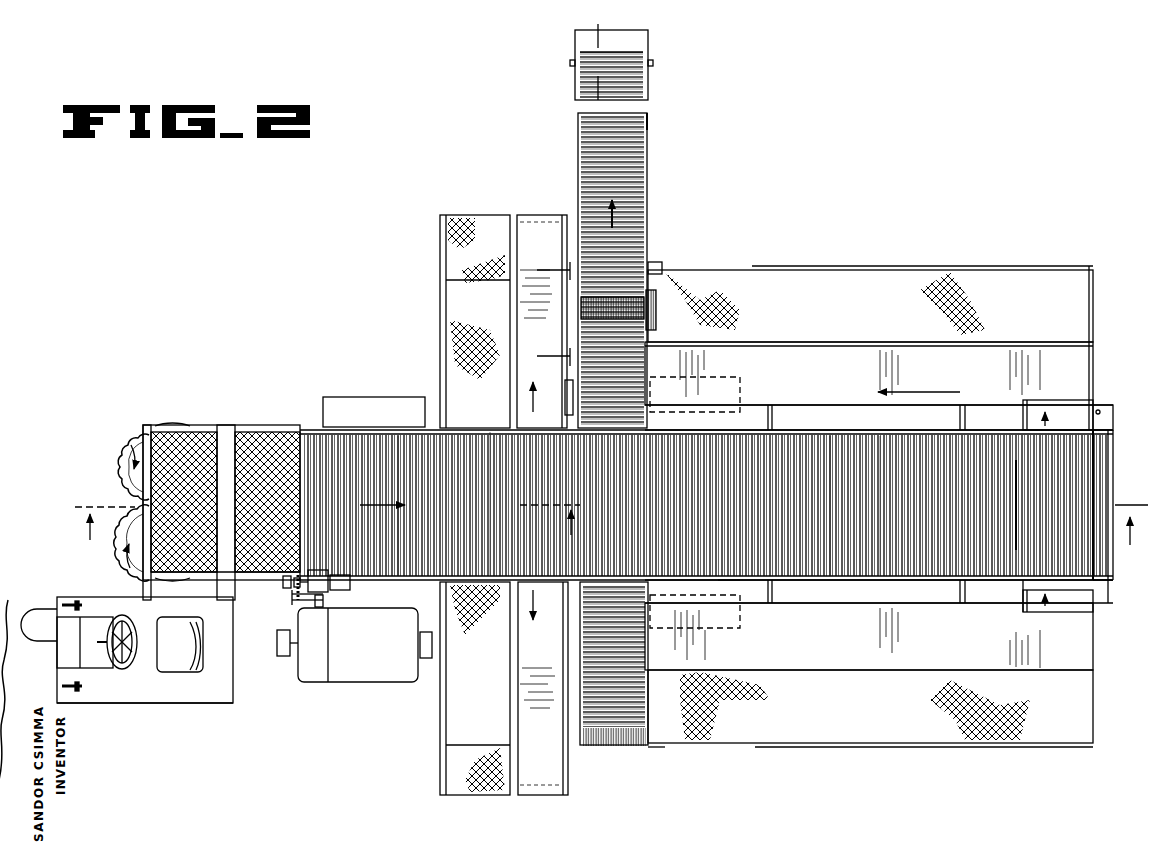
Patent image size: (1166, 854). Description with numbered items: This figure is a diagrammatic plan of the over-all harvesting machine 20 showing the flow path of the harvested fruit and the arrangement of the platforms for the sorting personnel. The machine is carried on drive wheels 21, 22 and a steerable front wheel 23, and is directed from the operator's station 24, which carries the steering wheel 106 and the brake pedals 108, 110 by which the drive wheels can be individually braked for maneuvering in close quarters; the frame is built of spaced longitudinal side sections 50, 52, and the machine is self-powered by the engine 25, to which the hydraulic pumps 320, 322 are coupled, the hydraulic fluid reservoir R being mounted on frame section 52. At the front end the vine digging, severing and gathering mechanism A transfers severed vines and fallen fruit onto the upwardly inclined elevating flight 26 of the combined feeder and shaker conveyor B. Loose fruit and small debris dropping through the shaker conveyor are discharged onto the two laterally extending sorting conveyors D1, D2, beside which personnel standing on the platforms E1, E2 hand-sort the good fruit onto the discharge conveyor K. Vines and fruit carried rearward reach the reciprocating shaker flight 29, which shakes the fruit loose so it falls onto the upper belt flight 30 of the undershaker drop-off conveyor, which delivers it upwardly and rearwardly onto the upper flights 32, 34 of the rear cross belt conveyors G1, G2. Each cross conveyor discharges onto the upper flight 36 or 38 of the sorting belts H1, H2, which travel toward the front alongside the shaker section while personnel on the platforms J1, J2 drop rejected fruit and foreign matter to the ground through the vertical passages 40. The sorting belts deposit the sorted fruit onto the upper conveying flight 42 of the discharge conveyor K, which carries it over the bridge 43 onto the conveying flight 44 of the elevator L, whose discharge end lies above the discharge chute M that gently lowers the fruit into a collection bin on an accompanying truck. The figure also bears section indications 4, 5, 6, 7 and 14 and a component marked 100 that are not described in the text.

The harvesting machine 20 is at (267, 313).
The elevating flight 26 is at (345, 448).
The shaker flight 29 is at (886, 461).
The vine digging, severing and gathering mechanism A is at (126, 452).
The combined feeder and shaker conveyor B is at (398, 430).
The drive frame 100 is at (127, 647).
The steerable front wheel 23 is at (44, 610).
The steering wheel 106 is at (122, 661).
The brake pedal 110 is at (80, 602).
The brake pedal 108 is at (76, 692).
The operator's station 24 is at (126, 710).
The view direction 6 is at (128, 782).
The longitudinal side section 50 is at (363, 578).
The engine 25 is at (358, 645).
The hydraulic pump 322 is at (284, 656).
The hydraulic pump 320 is at (426, 658).
The hydraulic fluid reservoir R is at (374, 412).
The platform E2 is at (453, 304).
The longitudinal side section 52 is at (483, 428).
The sorting conveyor D2 is at (553, 213).
The section line 7 is at (552, 315).
The platform E1 is at (440, 734).
The sorting conveyor D1 is at (548, 798).
The conveying flight 44 is at (636, 182).
The elevator L is at (651, 92).
The bridge 43 is at (592, 313).
The discharge conveyor K is at (648, 322).
The discharge chute M is at (652, 35).
The section line 14 is at (592, 30).
The upper conveying flight 42 is at (592, 643).
The platform J2 is at (870, 348).
The upper flight 38 is at (869, 373).
The sorting belt H2 is at (899, 363).
The drive wheel 22 is at (704, 377).
The vertical passages 40 is at (791, 430).
The rear cross belt conveyor G2 is at (1063, 401).
The upper flight 34 is at (1083, 427).
The upper flight 36 is at (869, 636).
The sorting belt H1 is at (852, 621).
The drive wheel 21 is at (694, 629).
The platform J1 is at (870, 708).
The rear cross belt conveyor G1 is at (1076, 611).
The upper flight 32 is at (1037, 602).
The upper belt flight 30 is at (1110, 582).
The section line 4 is at (327, 509).
The section line 5 is at (868, 511).